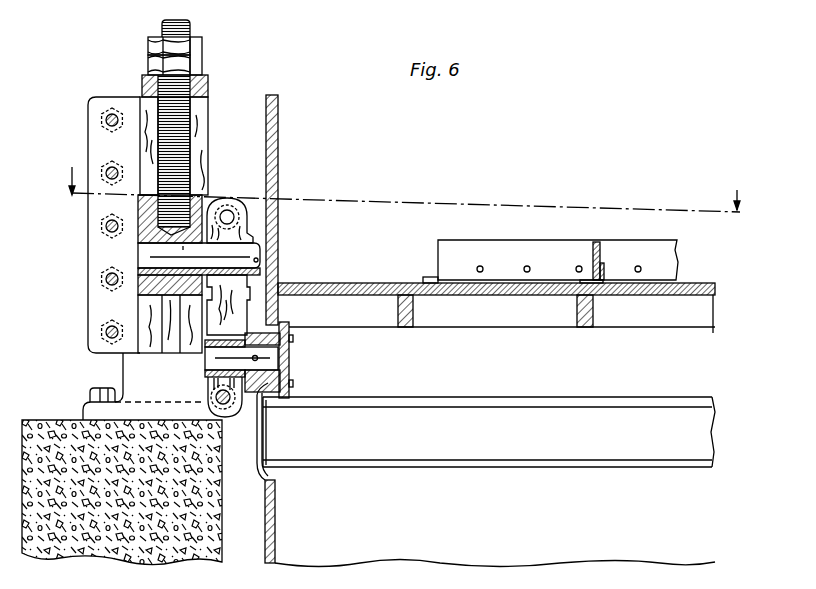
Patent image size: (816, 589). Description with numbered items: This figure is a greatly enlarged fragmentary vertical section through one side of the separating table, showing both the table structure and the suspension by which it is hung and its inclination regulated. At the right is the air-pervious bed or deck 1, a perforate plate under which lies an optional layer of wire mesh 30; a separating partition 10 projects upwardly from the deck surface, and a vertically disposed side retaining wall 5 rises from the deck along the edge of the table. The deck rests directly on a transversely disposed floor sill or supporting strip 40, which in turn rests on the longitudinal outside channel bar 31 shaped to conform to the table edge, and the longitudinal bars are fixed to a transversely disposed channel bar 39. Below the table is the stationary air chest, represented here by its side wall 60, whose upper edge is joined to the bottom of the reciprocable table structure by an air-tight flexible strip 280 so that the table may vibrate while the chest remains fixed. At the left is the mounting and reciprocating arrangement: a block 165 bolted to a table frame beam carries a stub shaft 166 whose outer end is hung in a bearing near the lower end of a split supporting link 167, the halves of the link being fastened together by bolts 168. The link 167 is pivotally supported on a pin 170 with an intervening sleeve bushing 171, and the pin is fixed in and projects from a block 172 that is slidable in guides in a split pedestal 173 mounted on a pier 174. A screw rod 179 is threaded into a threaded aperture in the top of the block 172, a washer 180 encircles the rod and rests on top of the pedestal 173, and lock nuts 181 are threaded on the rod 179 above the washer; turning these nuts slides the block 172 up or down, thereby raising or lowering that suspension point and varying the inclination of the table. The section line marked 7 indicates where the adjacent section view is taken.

The bed or deck 1 is at (496, 281).
The side retaining wall 5 is at (278, 152).
The section line 7- 7 is at (405, 197).
The separating partition 10 is at (601, 253).
The layer of wire mesh 30 is at (473, 296).
The outside channel bar 31 is at (292, 362).
The transversely-disposed channel bar 39 is at (437, 416).
The floor sill or supporting strip 40 is at (407, 318).
The side wall of air chamber 60 is at (265, 542).
The block 165 is at (247, 384).
The stub shaft 166 is at (215, 356).
The supporting link 167 is at (248, 312).
The bolt 168 is at (236, 218).
The pin 170 is at (262, 251).
The sleeve bushing 171 is at (257, 271).
The block 172 is at (147, 284).
The split pedestal 173 is at (88, 326).
The pier 174 is at (60, 421).
The screw rod 179 is at (186, 158).
The washer 180 is at (208, 93).
The lock nut 181 is at (204, 64).
The flexible strip 280 is at (257, 462).